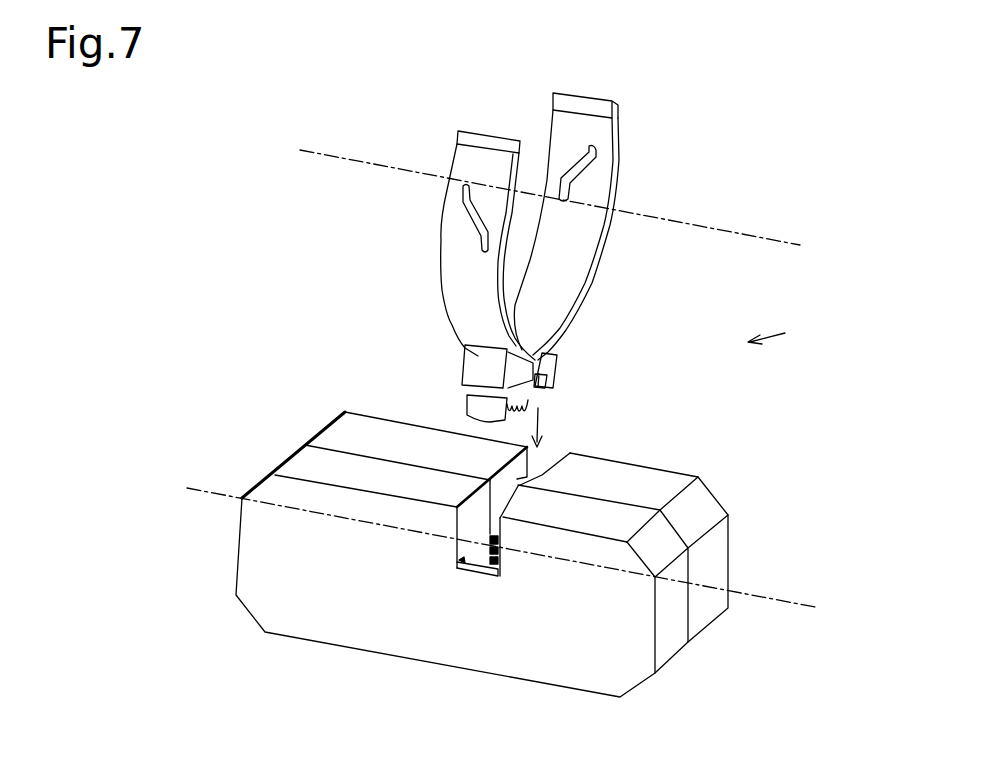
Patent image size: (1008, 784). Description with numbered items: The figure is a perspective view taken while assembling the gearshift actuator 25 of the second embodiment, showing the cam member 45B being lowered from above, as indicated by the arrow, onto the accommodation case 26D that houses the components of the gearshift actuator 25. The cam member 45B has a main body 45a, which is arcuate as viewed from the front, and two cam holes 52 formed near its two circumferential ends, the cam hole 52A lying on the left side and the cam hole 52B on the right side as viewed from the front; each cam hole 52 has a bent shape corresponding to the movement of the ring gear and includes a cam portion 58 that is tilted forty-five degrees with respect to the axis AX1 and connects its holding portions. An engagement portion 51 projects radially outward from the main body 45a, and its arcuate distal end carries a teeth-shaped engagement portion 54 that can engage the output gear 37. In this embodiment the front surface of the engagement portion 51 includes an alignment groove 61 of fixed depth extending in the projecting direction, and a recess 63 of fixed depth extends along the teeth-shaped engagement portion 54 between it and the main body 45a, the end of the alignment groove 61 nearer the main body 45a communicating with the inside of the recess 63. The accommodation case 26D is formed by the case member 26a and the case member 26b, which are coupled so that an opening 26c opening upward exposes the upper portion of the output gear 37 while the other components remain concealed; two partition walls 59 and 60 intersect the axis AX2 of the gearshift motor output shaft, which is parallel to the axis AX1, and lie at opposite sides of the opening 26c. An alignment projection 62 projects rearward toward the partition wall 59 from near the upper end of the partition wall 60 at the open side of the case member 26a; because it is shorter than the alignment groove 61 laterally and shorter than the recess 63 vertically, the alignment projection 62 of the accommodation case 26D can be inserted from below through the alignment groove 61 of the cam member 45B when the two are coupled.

The cam member 45B is at (521, 255).
The main body 45a is at (608, 236).
The cam hole 52 is at (521, 192).
The cam hole 52A is at (466, 188).
The cam hole 52B is at (592, 150).
The cam portion 58 is at (575, 162).
The recess 63 is at (520, 372).
The engagement portion 51 is at (556, 362).
The alignment groove 61 is at (545, 387).
The teeth-shaped engagement portion 54 is at (487, 422).
The gearshift actuator 25 is at (786, 332).
The accommodation case 26D is at (328, 412).
The case member 26a is at (643, 464).
The case member 26b is at (238, 532).
The opening 26c is at (460, 564).
The output gear 37 is at (487, 537).
The partition wall 59 is at (517, 478).
The partition wall 60 is at (556, 460).
The alignment projection 62 is at (543, 479).
The axis of the motor AX1 is at (758, 238).
The axis of the output shaft AX2 is at (773, 597).